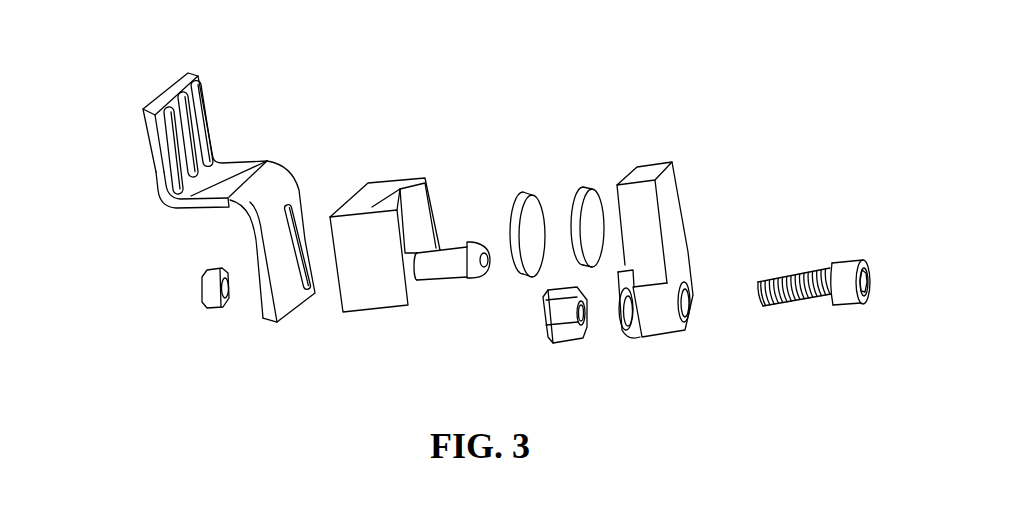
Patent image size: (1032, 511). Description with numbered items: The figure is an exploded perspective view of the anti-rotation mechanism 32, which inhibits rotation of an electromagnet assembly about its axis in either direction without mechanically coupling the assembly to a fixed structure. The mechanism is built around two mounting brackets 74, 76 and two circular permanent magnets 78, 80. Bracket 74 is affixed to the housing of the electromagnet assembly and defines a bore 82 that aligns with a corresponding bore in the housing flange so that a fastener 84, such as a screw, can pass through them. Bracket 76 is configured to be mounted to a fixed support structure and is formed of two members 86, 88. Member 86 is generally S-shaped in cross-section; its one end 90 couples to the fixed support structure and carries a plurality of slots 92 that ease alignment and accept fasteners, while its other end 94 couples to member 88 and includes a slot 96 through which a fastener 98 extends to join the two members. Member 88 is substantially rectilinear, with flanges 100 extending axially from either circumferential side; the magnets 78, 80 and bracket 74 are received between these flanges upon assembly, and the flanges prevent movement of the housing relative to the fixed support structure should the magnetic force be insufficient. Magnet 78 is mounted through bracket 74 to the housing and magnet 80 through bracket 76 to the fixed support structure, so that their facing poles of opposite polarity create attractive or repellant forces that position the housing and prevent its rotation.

The anti-rotation mechanism 32 is at (484, 100).
The mounting bracket 74 is at (667, 198).
The mounting bracket 76 is at (223, 213).
The permanent magnet 78 is at (587, 200).
The permanent magnet 80 is at (523, 200).
The bore 82 is at (633, 262).
The fastener 84 is at (817, 268).
The member 86 is at (147, 188).
The member 88 is at (378, 181).
The end 90 is at (157, 138).
The slots 92 is at (187, 132).
The end 94 is at (268, 302).
The slot 96 is at (307, 277).
The fastener 98 is at (453, 252).
The flanges 100 is at (387, 290).